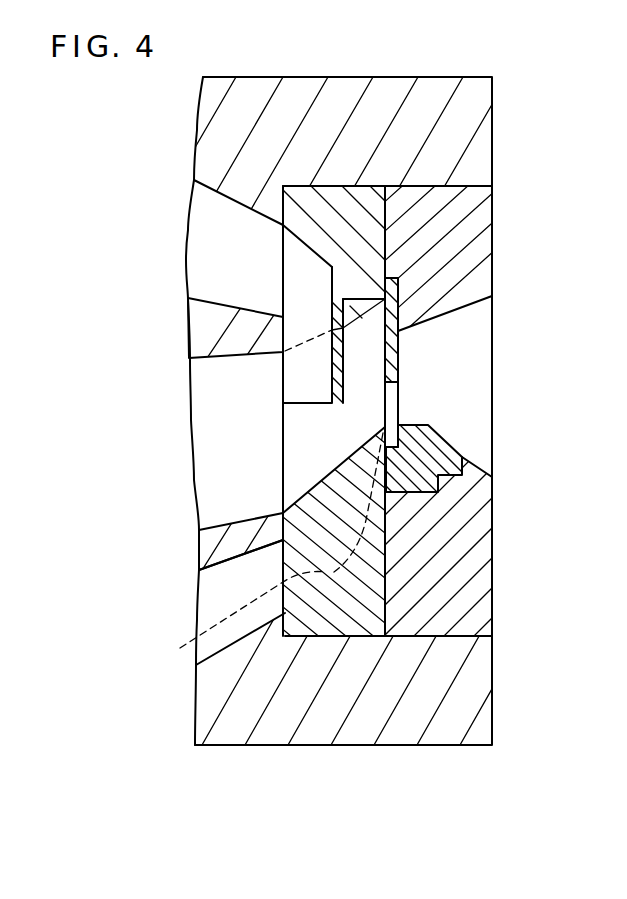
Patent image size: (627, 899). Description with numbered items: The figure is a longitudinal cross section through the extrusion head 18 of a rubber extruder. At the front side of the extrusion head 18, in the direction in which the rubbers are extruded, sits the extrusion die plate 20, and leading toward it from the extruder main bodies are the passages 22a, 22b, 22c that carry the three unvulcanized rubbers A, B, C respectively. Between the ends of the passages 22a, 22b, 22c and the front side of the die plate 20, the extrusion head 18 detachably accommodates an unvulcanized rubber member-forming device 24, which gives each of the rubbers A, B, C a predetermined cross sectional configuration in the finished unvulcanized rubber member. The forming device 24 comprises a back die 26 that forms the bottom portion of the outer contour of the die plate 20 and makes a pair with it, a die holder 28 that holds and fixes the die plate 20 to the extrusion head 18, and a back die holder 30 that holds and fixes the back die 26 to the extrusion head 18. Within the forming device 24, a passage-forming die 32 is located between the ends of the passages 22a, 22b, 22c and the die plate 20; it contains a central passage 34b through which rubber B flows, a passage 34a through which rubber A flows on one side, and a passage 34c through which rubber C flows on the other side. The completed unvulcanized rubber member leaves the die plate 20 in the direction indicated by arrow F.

The extrusion head 18 is at (293, 746).
The extrusion die plate 20 is at (399, 352).
The passage 22a is at (230, 200).
The passage 22b is at (222, 531).
The passage 22c is at (222, 562).
The unvulcanized rubber member-forming device 24 is at (500, 280).
The back die 26 is at (438, 450).
The die holder 28 is at (480, 246).
The back die holder 30 is at (474, 533).
The passage-forming die 32 is at (364, 197).
The passage 34a is at (322, 260).
The passage 34b is at (345, 461).
The passage 34c is at (178, 651).
The unvulcanized rubber A is at (202, 237).
The unvulcanized rubber B is at (217, 418).
The unvulcanized rubber C is at (205, 604).
The arrow F is at (463, 818).